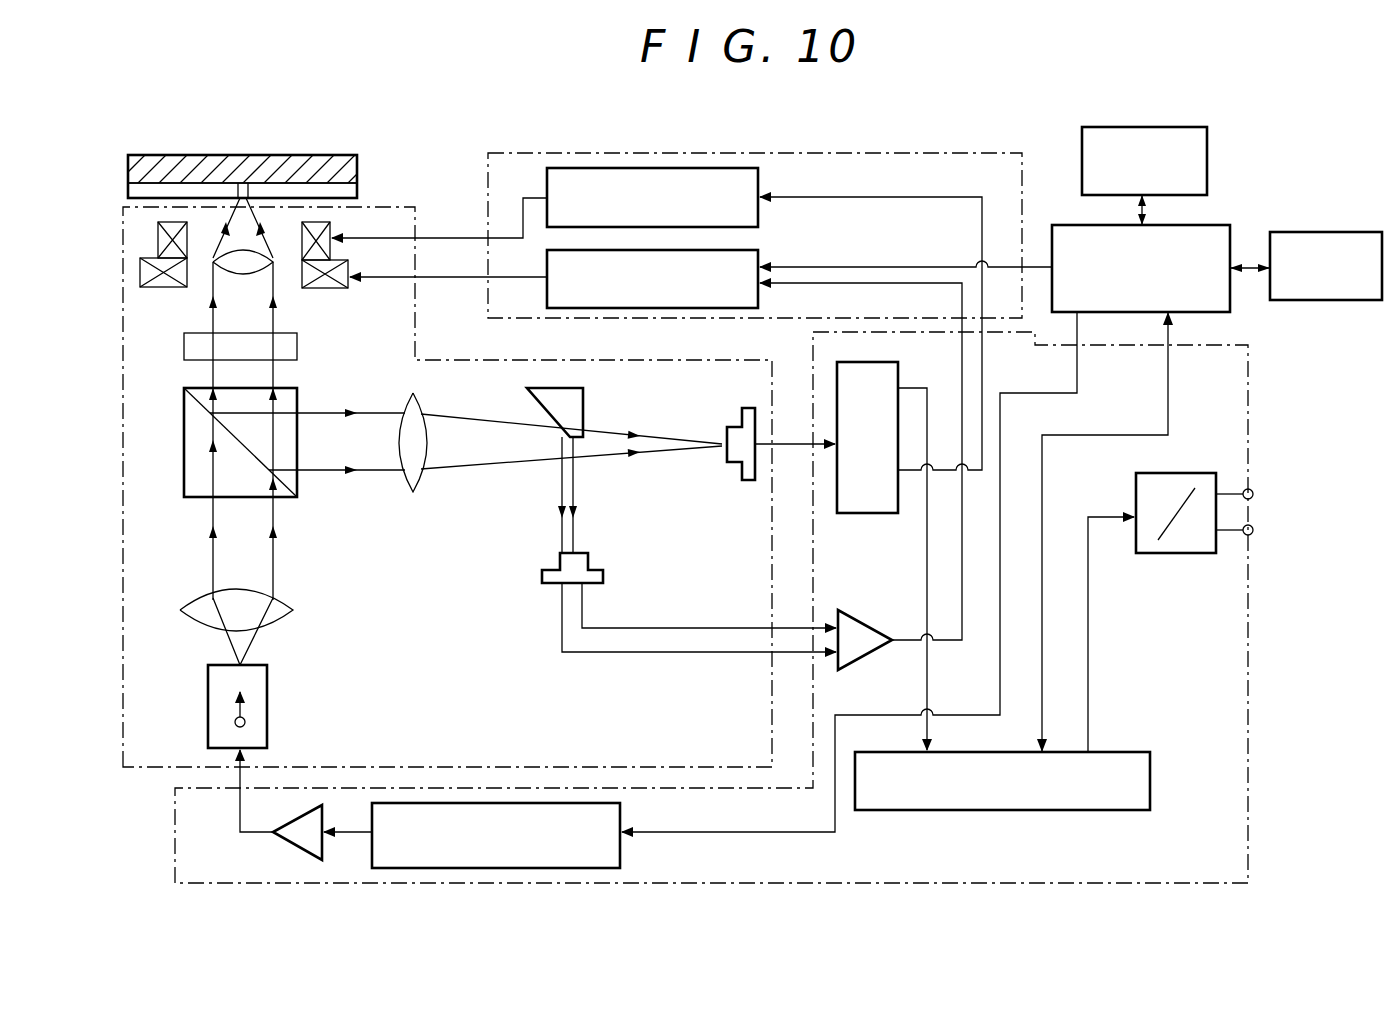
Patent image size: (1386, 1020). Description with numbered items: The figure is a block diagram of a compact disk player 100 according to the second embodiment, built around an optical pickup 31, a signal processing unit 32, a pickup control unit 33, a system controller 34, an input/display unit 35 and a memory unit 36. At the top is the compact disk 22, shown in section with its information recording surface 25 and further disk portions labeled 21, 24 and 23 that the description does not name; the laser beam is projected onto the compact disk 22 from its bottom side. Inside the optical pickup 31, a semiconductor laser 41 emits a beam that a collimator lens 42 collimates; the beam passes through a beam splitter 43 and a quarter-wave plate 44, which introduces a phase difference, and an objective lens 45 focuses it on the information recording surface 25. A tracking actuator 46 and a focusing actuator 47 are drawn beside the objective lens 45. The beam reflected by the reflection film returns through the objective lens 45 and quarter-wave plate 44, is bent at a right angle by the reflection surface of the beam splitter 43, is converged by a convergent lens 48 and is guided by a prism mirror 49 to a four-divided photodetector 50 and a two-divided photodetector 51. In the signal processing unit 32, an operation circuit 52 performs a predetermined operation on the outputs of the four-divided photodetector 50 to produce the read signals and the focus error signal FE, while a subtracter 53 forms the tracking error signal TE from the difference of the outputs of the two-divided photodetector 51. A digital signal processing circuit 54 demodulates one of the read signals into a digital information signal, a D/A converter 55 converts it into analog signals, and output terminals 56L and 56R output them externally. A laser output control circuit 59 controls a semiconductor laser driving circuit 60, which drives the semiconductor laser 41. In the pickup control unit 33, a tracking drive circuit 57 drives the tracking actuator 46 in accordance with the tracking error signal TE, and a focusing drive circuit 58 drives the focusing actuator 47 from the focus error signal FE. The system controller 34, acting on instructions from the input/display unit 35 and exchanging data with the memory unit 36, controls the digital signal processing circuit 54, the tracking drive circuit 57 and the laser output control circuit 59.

The compact disk player 100 is at (456, 186).
The compact disk 22 is at (180, 144).
The disc substrate 21 is at (228, 165).
The recording layer 24 is at (268, 155).
The information recording surface 25 is at (312, 183).
The transparent layer / pit 23 is at (358, 191).
The optical pickup 31 is at (416, 322).
The signal processing unit 32 is at (1248, 797).
The pickup control unit 33 is at (705, 152).
The system controller 34 is at (1062, 225).
The input/display unit 35 is at (1082, 140).
The memory unit 36 is at (1288, 232).
The semiconductor laser 41 is at (268, 700).
The collimator lens 42 is at (292, 605).
The beam splitter 43 is at (184, 460).
The quarter-wave plate 44 is at (185, 355).
The objective lens 45 is at (262, 272).
The tracking actuator 46 is at (164, 287).
The focusing actuator 47 is at (206, 237).
The convergent lens 48 is at (413, 492).
The prism mirror 49 is at (584, 405).
The four-divided photodetector 50 is at (736, 425).
The two-divided photodetector 51 is at (542, 576).
The operation circuit 52 is at (850, 513).
The subtracter 53 is at (856, 624).
The digital signal processing circuit 54 is at (1128, 752).
The D/A converter 55 is at (1136, 490).
The output terminal 56L is at (1252, 490).
The output terminal 56R is at (1252, 535).
The tracking drive circuit 57 is at (758, 252).
The focusing drive circuit 58 is at (758, 172).
The laser output control circuit 59 is at (620, 812).
The semiconductor laser driving circuit 60 is at (285, 842).